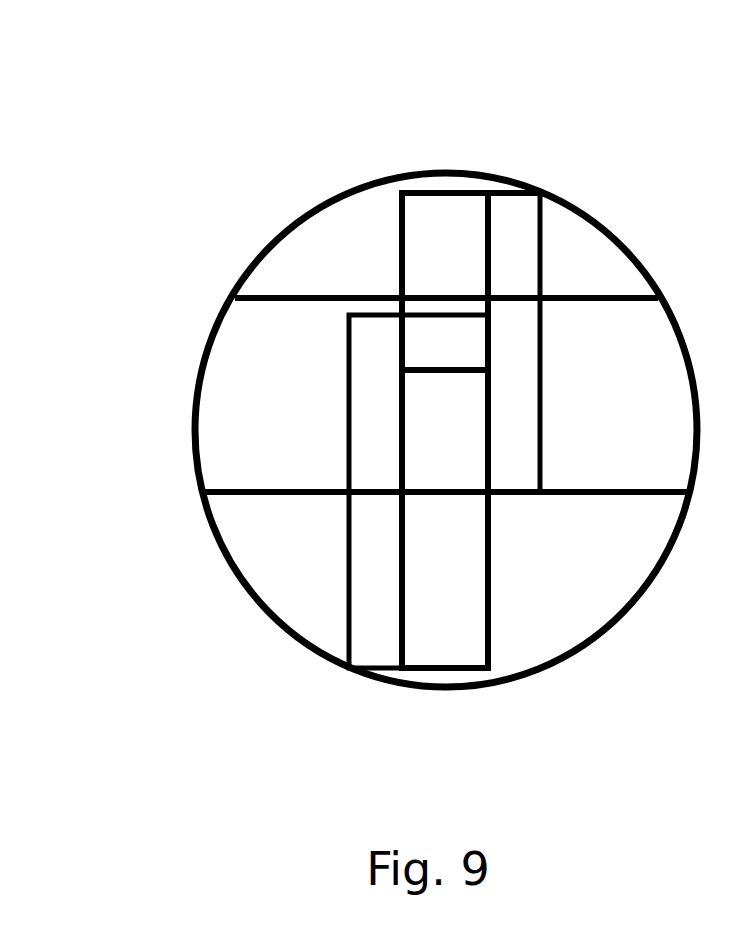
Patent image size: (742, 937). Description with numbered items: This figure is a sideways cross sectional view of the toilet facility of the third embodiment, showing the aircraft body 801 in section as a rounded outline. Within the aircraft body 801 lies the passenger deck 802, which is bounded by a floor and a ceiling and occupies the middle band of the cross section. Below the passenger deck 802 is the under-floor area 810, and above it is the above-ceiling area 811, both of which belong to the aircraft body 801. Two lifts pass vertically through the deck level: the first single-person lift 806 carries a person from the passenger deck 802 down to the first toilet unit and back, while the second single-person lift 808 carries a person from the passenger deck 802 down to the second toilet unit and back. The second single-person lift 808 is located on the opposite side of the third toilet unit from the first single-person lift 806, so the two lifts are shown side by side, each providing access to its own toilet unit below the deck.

The aircraft body 801 is at (615, 176).
The passenger deck 802 is at (238, 407).
The first single-person lift 806 is at (373, 622).
The second single-person lift 808 is at (519, 242).
The under-floor area 810 is at (258, 570).
The above-ceiling area 811 is at (307, 227).